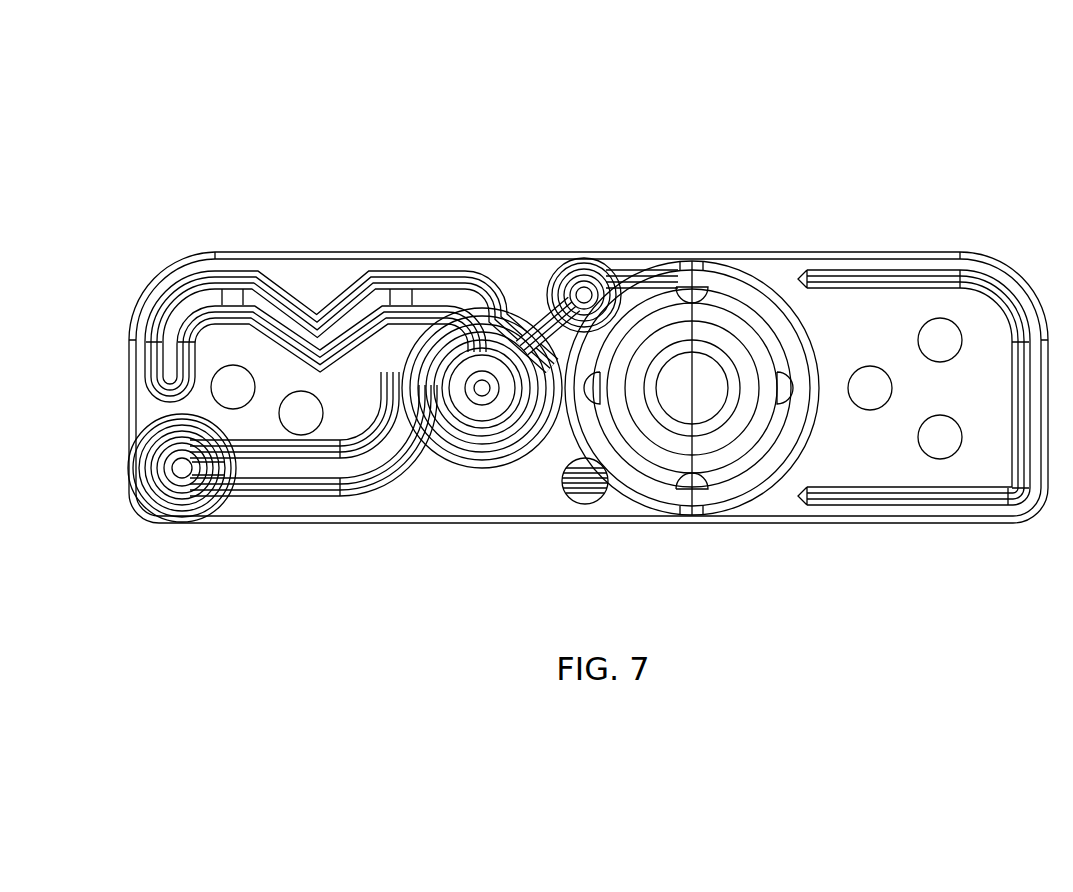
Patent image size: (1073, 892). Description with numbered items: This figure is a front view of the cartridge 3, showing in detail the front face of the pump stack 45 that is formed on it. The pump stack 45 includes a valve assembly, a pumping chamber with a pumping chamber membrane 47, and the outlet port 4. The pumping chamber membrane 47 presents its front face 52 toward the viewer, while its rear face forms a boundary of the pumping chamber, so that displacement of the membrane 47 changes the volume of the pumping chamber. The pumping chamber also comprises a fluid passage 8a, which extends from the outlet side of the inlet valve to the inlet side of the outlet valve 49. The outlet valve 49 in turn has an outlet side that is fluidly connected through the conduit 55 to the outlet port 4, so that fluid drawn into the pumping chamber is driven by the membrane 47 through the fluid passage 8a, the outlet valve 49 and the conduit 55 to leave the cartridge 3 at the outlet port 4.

The cartridge 3 is at (430, 160).
The pump stack 45 is at (850, 200).
The fluid passage 8a is at (590, 288).
The pumping chamber membrane 47 is at (703, 340).
The front face 52 is at (708, 447).
The outlet valve 49 is at (482, 412).
The conduit 55 is at (300, 470).
The outlet port 4 is at (182, 472).